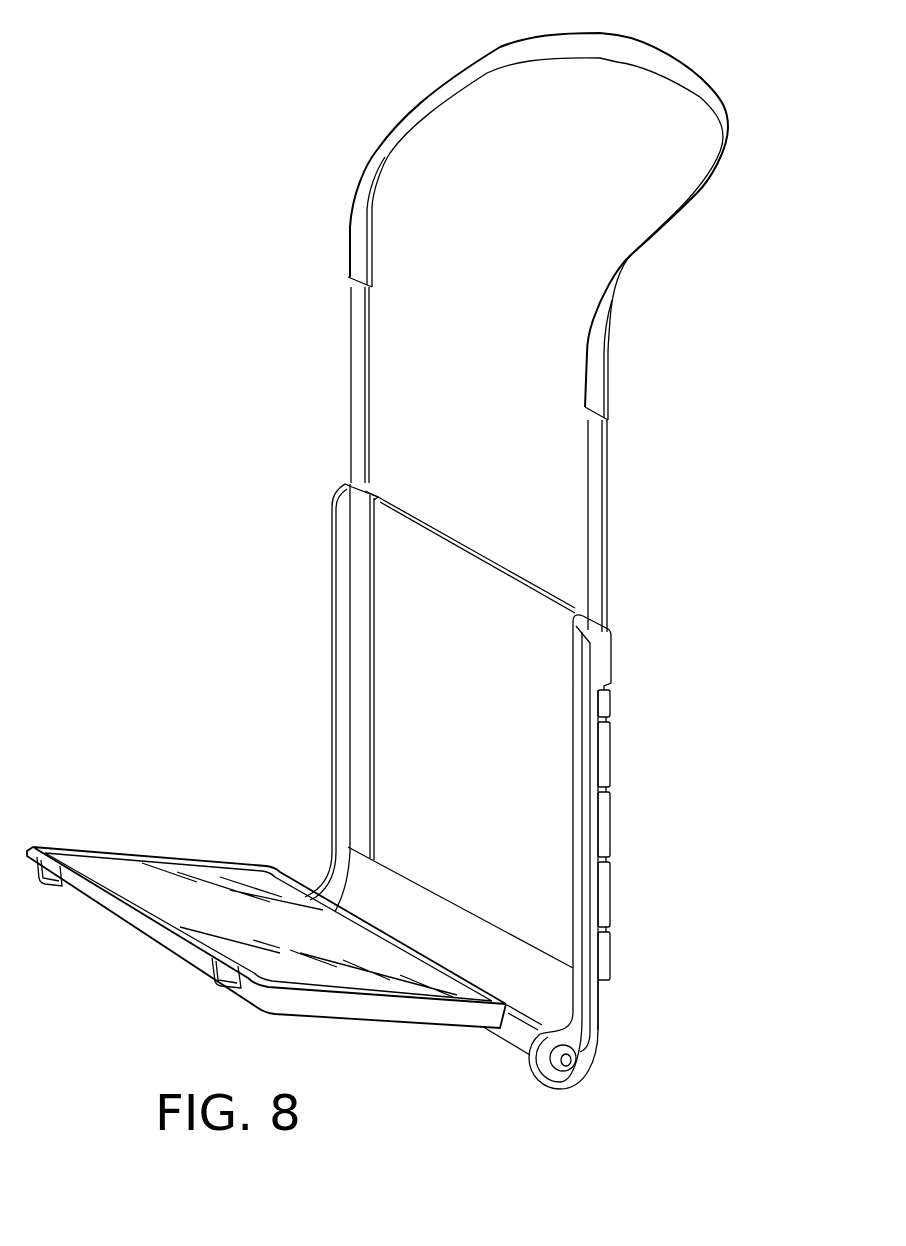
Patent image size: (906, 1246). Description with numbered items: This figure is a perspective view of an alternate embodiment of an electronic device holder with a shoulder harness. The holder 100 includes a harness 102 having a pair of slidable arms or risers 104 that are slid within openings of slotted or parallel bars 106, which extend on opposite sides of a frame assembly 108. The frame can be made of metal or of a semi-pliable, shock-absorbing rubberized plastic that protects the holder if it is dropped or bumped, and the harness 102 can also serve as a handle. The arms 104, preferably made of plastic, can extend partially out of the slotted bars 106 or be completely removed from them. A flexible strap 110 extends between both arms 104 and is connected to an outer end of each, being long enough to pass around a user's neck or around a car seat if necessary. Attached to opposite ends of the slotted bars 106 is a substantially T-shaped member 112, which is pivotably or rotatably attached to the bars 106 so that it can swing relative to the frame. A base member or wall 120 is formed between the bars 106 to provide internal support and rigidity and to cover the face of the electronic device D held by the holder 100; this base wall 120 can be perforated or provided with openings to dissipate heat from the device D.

The holder 100 is at (457, 505).
The harness 102 is at (358, 322).
The slidable arms or risers 104 is at (358, 420).
The slotted or parallel bars 106 is at (592, 660).
The frame assembly 108 is at (320, 781).
The flexible strap 110 is at (415, 118).
The T-shaped member 112 is at (530, 1008).
The base member or wall 120 is at (407, 636).
The electronic device D is at (358, 935).